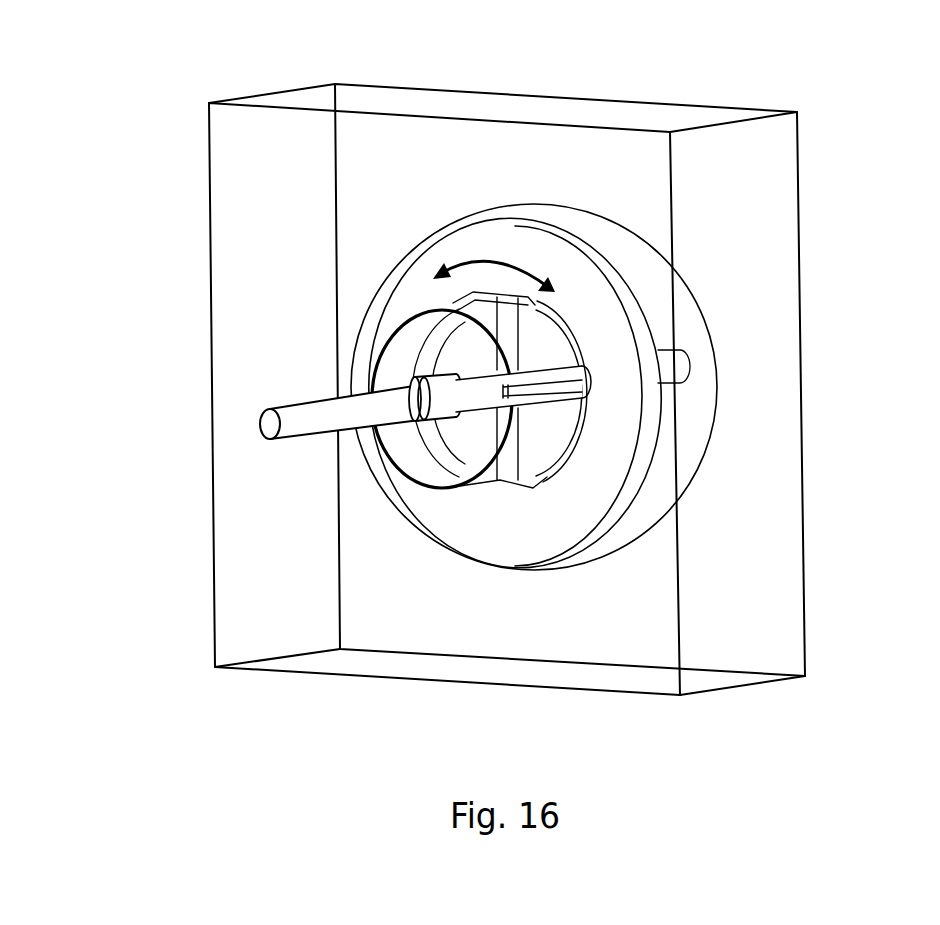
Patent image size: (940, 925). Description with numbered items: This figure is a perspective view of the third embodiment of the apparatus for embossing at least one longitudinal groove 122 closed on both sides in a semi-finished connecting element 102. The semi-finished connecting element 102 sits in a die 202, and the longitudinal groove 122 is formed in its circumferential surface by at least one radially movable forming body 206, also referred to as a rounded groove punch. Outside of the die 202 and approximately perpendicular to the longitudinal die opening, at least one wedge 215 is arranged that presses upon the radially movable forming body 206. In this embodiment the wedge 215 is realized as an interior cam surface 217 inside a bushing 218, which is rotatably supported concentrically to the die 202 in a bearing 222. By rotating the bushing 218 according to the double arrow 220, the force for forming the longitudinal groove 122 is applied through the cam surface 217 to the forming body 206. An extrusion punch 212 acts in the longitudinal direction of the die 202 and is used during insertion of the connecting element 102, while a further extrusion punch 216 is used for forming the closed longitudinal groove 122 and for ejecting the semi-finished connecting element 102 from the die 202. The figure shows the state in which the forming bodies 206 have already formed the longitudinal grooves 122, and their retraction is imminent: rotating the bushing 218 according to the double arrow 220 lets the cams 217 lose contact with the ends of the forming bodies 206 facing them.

The semi-finished connecting element 102 is at (487, 490).
The longitudinal groove closed on both sides 122 is at (530, 375).
The die 202 is at (397, 353).
The radially movable forming body 206 is at (507, 335).
The extrusion punch 212 is at (683, 363).
The wedge 215 is at (510, 460).
The extrusion punch 216 is at (287, 440).
The interior cam surface 217 is at (437, 305).
The bushing 218 is at (606, 447).
The double arrow 220 is at (494, 216).
The bearing 222 is at (768, 160).